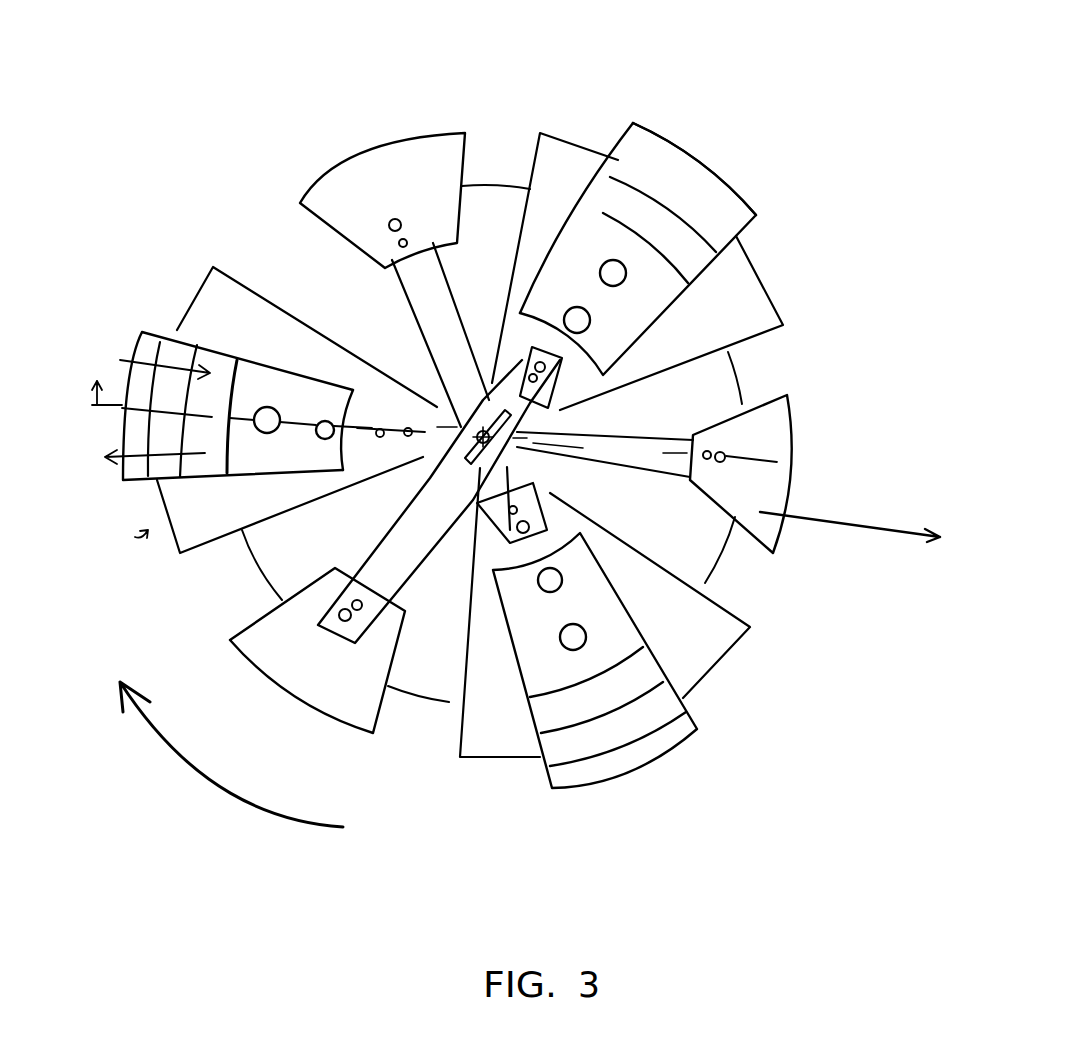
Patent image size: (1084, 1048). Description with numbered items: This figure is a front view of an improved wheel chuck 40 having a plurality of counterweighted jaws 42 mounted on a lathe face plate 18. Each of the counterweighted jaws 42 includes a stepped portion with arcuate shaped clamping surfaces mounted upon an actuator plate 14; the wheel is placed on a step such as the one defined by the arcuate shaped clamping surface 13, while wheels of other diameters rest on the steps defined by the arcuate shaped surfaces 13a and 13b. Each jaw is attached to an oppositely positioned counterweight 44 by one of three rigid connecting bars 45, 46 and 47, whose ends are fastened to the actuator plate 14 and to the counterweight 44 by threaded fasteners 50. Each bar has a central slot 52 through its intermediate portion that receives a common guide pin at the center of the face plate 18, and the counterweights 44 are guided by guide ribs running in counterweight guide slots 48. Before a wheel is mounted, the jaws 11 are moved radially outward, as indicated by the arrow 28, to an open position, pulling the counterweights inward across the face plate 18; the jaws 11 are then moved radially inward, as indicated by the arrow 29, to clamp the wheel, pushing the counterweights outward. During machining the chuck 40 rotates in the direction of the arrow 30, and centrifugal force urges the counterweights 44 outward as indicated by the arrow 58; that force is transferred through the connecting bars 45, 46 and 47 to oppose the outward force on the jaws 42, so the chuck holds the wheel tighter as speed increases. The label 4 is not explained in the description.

The dimension / direction arrow 4 is at (107, 393).
The jaws 11 is at (128, 539).
The arcuate shaped clamping surface 13 is at (606, 190).
The arcuate shaped surface 13a is at (600, 216).
The arcuate shaped surface 13b is at (620, 160).
The actuator plate 14 is at (213, 266).
The lathe face plate 18 is at (684, 530).
The arrow indicating outward radial direction 28 is at (229, 408).
The arrow indicating radial inward direction 29 is at (330, 421).
The arrow indicating rotation 30 is at (231, 754).
The wheel chuck 40 is at (315, 56).
The counterweighted jaws 42 is at (620, 82).
The counterweight 44 is at (470, 163).
The connecting bar 45 is at (665, 410).
The connecting bar 46 is at (398, 286).
The connecting bar 47 is at (364, 563).
The counterweight guide slot 48 is at (557, 368).
The threaded fasteners 50 is at (522, 372).
The central slot 52 is at (470, 417).
The arrow indicating outward radial direction of counterweight 58 is at (850, 541).